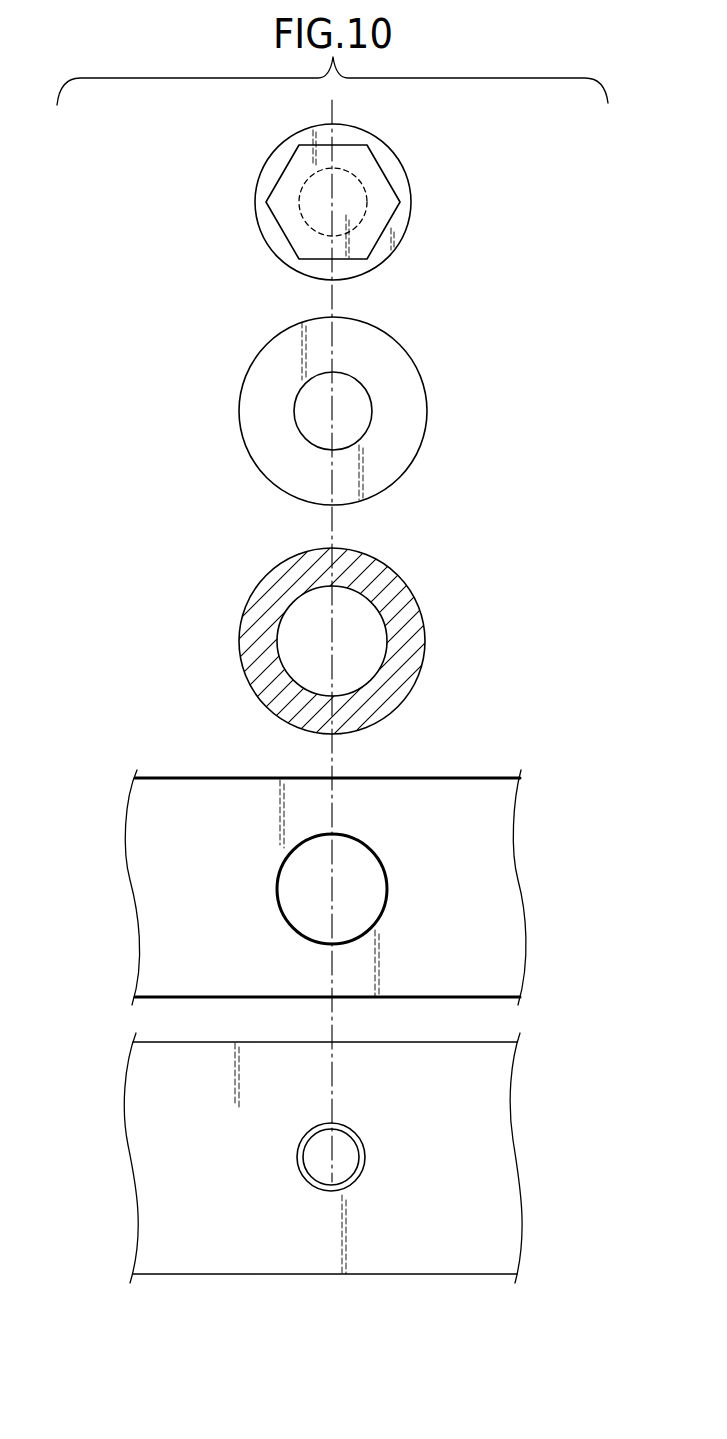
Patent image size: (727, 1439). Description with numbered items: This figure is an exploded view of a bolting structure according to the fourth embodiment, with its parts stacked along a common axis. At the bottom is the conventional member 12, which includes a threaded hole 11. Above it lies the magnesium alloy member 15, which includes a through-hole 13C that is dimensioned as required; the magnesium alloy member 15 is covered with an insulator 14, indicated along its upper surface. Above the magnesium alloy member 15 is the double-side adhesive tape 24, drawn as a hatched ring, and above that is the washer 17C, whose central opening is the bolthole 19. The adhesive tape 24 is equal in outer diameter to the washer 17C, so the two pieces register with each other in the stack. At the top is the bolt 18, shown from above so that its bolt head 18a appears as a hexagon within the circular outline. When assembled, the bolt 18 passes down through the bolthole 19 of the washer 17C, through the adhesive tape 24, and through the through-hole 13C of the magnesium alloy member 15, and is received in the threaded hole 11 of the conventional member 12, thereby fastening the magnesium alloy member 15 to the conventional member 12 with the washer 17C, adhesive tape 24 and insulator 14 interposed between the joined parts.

The bolt 18 is at (255, 204).
The bolt head 18a is at (380, 168).
The washer 17C is at (240, 397).
The bolthole 19 is at (302, 430).
The double-side adhesive tape 24 is at (427, 646).
The insulator 14 is at (203, 778).
The magnesium alloy member 15 is at (128, 863).
The through-hole 13C is at (290, 916).
The conventional member 12 is at (126, 1118).
The threaded hole 11 is at (342, 1160).